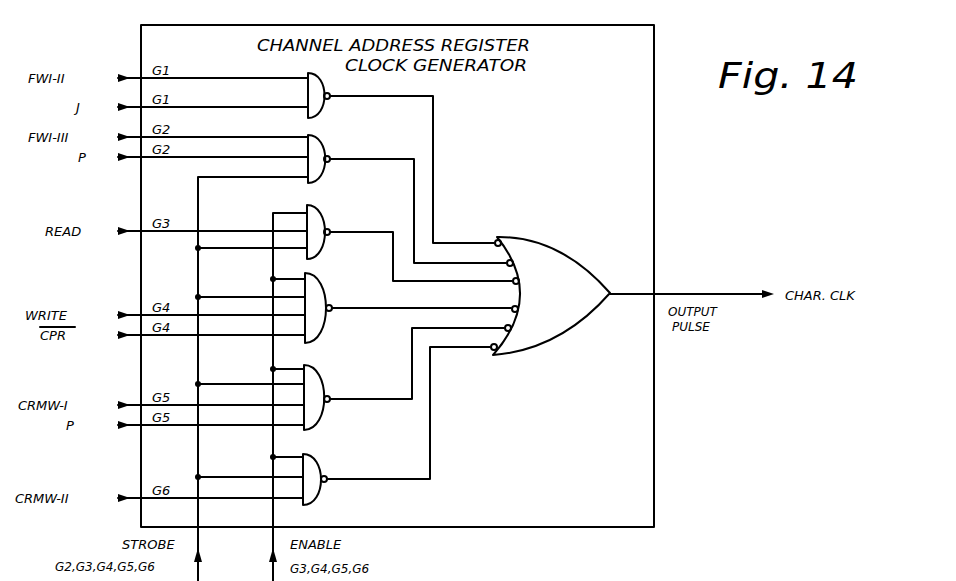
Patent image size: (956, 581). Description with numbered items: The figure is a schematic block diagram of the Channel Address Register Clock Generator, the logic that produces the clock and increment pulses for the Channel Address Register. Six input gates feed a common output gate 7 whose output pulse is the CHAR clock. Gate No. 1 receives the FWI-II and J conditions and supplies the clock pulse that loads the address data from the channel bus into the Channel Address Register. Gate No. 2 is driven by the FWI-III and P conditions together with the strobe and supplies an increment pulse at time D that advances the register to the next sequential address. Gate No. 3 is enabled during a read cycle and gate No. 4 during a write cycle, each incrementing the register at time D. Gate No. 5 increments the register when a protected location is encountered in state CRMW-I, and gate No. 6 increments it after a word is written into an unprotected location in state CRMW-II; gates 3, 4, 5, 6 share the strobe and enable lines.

The gate No. 1 is at (401, 158).
The gate No. 2 is at (407, 199).
The gate No. 3 is at (409, 243).
The gate No. 4 is at (408, 308).
The gate No. 5 is at (404, 379).
The gate No. 6 is at (396, 426).
The output gate 7 is at (632, 296).